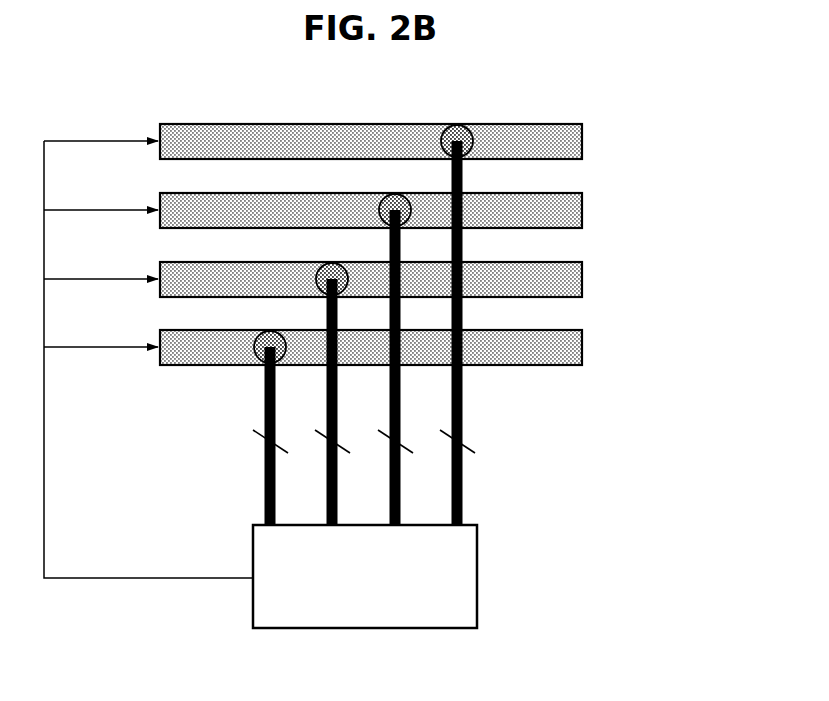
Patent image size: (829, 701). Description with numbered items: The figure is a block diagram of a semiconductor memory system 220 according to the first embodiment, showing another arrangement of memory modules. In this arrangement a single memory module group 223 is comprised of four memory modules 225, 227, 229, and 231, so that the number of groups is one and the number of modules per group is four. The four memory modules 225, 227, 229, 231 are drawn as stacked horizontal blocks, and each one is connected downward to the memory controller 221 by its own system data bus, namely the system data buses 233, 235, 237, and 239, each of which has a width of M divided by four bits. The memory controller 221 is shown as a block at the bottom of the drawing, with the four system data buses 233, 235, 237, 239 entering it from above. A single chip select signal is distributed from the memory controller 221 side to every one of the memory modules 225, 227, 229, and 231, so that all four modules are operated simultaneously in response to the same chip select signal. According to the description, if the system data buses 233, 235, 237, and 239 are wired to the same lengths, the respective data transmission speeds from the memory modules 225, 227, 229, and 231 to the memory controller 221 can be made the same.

The semiconductor memory system 220 is at (585, 88).
The memory controller 221 is at (478, 578).
The memory module group 223 is at (677, 120).
The memory module 225 is at (583, 348).
The memory module 227 is at (583, 280).
The memory module 229 is at (583, 211).
The memory module 231 is at (583, 142).
The system data bus 233 is at (264, 510).
The system data bus 235 is at (326, 402).
The system data bus 237 is at (401, 401).
The system data bus 239 is at (463, 503).